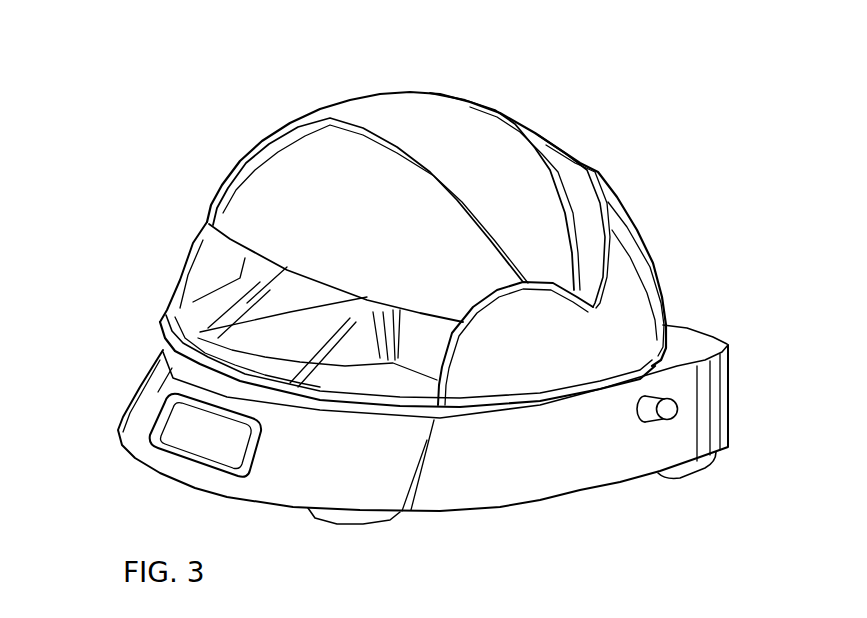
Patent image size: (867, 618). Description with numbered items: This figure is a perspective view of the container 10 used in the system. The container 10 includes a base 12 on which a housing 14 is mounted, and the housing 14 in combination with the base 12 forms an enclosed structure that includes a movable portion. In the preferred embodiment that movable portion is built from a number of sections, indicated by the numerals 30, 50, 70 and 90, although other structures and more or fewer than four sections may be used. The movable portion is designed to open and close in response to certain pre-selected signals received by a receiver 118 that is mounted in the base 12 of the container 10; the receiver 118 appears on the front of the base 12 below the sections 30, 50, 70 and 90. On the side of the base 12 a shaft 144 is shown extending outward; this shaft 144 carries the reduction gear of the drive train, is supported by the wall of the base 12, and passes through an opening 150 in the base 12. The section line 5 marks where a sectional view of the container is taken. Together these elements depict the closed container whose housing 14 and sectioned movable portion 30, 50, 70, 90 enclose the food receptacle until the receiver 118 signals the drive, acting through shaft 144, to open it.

The container 10 is at (527, 83).
The base 12 is at (517, 506).
The housing 14 is at (600, 183).
The section 30 is at (193, 277).
The section 50 is at (282, 180).
The section 70 is at (375, 107).
The section 90 is at (533, 138).
The receiver 118 is at (190, 448).
The shaft 144 is at (668, 413).
The opening 150 is at (650, 397).
The section line 5- 5 is at (147, 325).